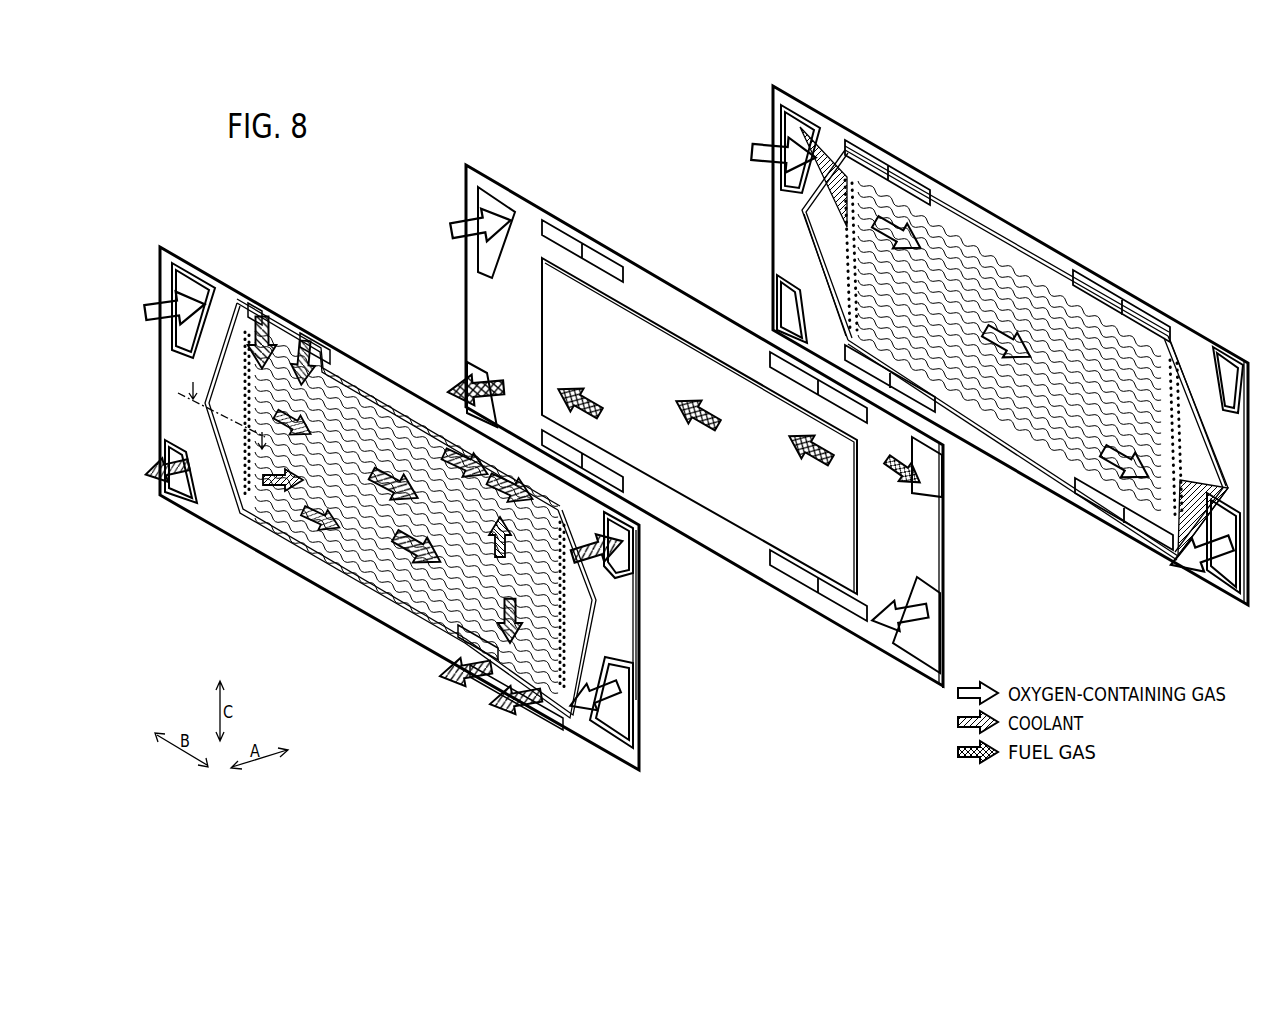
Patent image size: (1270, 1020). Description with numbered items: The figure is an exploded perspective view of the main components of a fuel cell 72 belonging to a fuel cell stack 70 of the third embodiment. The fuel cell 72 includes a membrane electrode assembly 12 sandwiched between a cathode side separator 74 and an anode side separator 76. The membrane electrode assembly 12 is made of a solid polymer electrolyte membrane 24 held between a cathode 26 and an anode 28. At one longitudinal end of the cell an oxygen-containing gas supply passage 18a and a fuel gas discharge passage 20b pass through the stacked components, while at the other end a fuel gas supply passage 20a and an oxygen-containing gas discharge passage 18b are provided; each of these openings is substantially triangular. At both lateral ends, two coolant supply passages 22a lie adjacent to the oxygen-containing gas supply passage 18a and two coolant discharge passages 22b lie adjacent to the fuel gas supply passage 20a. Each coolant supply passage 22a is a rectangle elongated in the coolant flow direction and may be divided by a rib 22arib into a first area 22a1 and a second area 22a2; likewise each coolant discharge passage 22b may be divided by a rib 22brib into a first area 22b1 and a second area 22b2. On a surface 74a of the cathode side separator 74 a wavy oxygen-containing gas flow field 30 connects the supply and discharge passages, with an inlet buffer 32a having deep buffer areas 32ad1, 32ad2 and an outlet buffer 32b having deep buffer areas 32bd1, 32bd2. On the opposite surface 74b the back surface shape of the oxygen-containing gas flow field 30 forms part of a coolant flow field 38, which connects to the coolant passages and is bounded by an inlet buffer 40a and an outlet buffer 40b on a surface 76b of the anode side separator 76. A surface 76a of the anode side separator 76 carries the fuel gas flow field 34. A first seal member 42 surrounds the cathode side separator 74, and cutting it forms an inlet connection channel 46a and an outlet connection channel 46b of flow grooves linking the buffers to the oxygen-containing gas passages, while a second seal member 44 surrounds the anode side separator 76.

The membrane electrode assembly 12 is at (487, 169).
The oxygen-containing gas supply passage 18a is at (193, 288).
The oxygen-containing gas discharge passage 18b is at (613, 720).
The fuel gas supply passage 20a is at (627, 553).
The fuel gas discharge passage 20b is at (180, 480).
The coolant supply passage 22a is at (283, 435).
The first area 22a1 is at (276, 340).
The second area 22a2 is at (290, 343).
The coolant discharge passage 22b is at (537, 583).
The first area 22b1 is at (563, 710).
The second area 22b2 is at (497, 673).
The rib 22arib is at (893, 187).
The rib 22brib is at (1113, 300).
The solid polymer electrolyte membrane 24 is at (937, 548).
The cathode 26 is at (633, 353).
The anode 28 is at (547, 327).
The oxygen-containing gas flow field 30 is at (960, 227).
The inlet buffer 32a is at (833, 263).
The deep buffer area 32ad1 is at (837, 233).
The deep buffer area 32ad2 is at (833, 280).
The outlet buffer 32b is at (1140, 417).
The deep buffer area 32bd1 is at (1193, 383).
The deep buffer area 32bd2 is at (1167, 527).
The fuel gas flow field 34 is at (397, 447).
The coolant flow field 38 is at (370, 547).
The inlet buffer 40a is at (233, 450).
The outlet buffer 40b is at (567, 633).
The first seal member 42 is at (1020, 270).
The second seal member 44 is at (380, 410).
The inlet connection channel 46a is at (833, 173).
The outlet connection channel 46b is at (1207, 487).
The fuel cell stack 70 is at (350, 190).
The fuel cell 72 is at (318, 190).
The cathode side separator 74 is at (764, 105).
The surface 74a is at (1035, 465).
The surface 74b is at (995, 455).
The anode side separator 76 is at (166, 239).
The surface 76a is at (622, 606).
The surface 76b is at (625, 633).